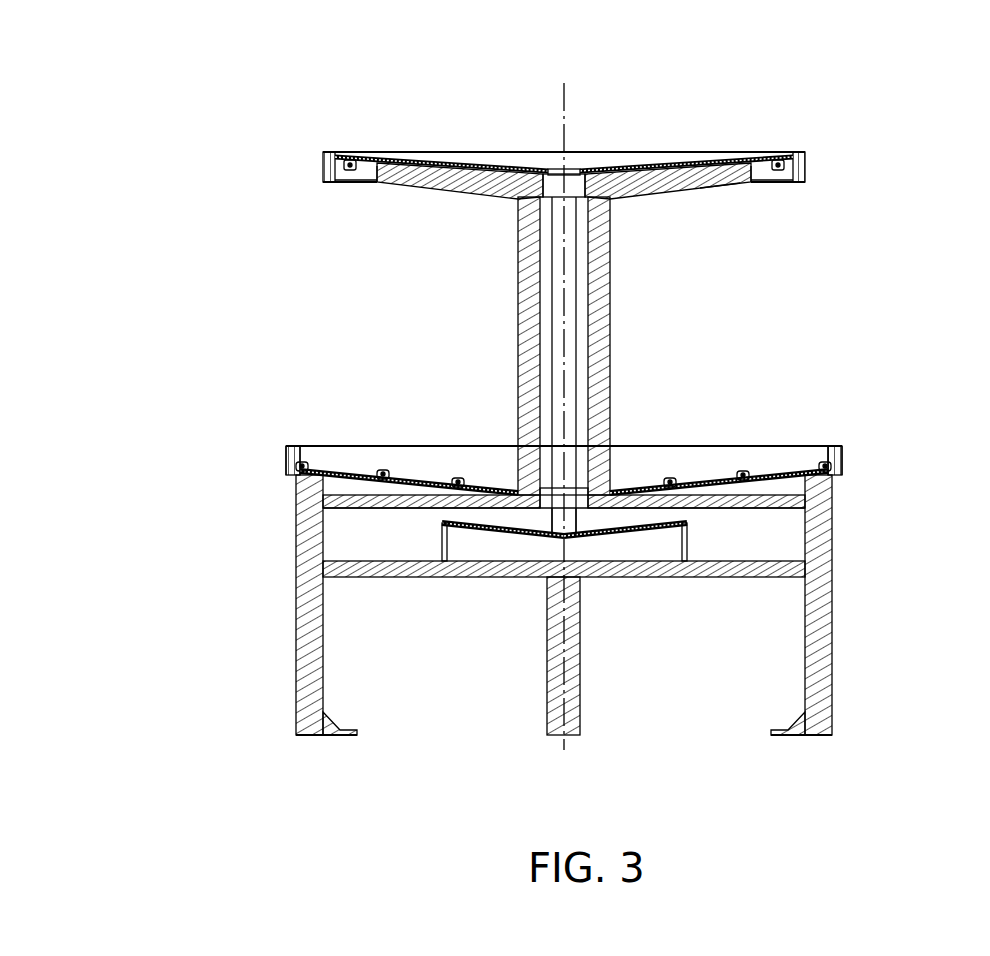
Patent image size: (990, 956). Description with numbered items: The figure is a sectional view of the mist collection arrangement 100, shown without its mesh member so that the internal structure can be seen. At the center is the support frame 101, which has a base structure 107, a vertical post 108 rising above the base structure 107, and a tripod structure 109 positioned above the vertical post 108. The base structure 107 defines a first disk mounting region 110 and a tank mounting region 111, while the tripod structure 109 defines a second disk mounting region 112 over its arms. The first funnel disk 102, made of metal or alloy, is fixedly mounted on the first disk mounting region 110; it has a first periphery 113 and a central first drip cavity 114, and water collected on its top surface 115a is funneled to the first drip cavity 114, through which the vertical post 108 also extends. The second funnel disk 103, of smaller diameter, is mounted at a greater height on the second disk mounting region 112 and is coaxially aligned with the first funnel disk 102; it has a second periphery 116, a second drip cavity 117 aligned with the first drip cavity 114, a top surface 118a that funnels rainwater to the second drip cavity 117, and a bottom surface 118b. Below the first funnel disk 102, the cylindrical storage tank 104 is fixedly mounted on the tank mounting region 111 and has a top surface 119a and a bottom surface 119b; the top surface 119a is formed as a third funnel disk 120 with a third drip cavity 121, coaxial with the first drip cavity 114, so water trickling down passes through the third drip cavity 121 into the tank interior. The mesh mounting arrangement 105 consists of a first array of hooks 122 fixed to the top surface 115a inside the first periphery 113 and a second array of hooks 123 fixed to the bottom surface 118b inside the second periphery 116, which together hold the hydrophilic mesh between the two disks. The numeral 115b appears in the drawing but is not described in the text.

The mist collection arrangement 100 is at (200, 72).
The support frame 101 is at (850, 569).
The first funnel disk 102 is at (843, 460).
The second funnel disk 103 is at (806, 170).
The cylindrical storage tank 104 is at (440, 522).
The mesh mounting arrangement 105 is at (372, 449).
The base structure 107 is at (833, 655).
The vertical post 108 is at (611, 330).
The tripod structure 109 is at (425, 187).
The first disk mounting region 110 is at (655, 486).
The tank mounting region 111 is at (742, 489).
The second disk mounting region 112 is at (392, 152).
The first periphery 113 is at (291, 446).
The first drip cavity 114 is at (552, 468).
The top surface of the first funnel disk 115a is at (420, 495).
The right support beam 115b is at (765, 509).
The second periphery 116 is at (776, 181).
The second drip cavity 117 is at (577, 140).
The top surface of the second funnel disk 118a is at (462, 166).
The bottom surface of the second funnel disk 118b is at (470, 186).
The top surface of the cylindrical storage tank 119a is at (480, 538).
The bottom surface of the cylindrical storage tank 119b is at (665, 540).
The third funnel disk 120 is at (500, 507).
The third drip cavity 121 is at (579, 513).
The first array of hooks 122 is at (830, 446).
The second array of hooks 123 is at (722, 186).